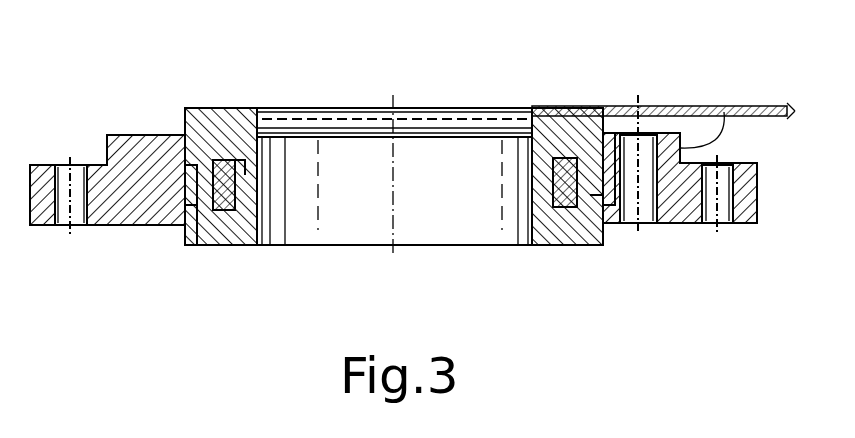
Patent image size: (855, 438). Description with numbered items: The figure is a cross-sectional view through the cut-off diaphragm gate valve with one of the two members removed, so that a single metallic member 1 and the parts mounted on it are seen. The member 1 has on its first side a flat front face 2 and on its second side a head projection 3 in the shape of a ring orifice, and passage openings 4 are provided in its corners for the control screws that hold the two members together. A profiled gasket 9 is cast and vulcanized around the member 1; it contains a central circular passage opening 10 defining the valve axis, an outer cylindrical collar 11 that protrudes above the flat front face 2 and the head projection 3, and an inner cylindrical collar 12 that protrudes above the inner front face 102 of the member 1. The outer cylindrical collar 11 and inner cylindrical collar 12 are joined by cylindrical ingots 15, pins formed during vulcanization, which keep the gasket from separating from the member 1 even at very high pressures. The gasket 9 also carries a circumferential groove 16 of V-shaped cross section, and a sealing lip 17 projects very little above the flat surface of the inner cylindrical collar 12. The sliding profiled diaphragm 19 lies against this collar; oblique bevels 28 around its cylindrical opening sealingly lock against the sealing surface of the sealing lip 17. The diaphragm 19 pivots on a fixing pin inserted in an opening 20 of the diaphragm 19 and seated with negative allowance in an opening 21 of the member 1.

The member 1 is at (140, 133).
The flat front face 2 is at (118, 228).
The head projection 3 is at (100, 162).
The passage openings 4 is at (62, 162).
The profiled gasket 9 is at (240, 248).
The central circular passage opening 10 is at (327, 232).
The outer cylindrical collar 11 is at (605, 230).
The inner cylindrical collar 12 is at (608, 105).
The cylindrical ingots 15 is at (570, 248).
The circumferential groove 16 is at (355, 130).
The sealing lip 17 is at (259, 108).
The profiled diaphragm 19 is at (768, 105).
The opening 20 is at (636, 105).
The opening 21 is at (652, 105).
The oblique bevels 28 is at (248, 108).
The inner front face 102 is at (168, 133).